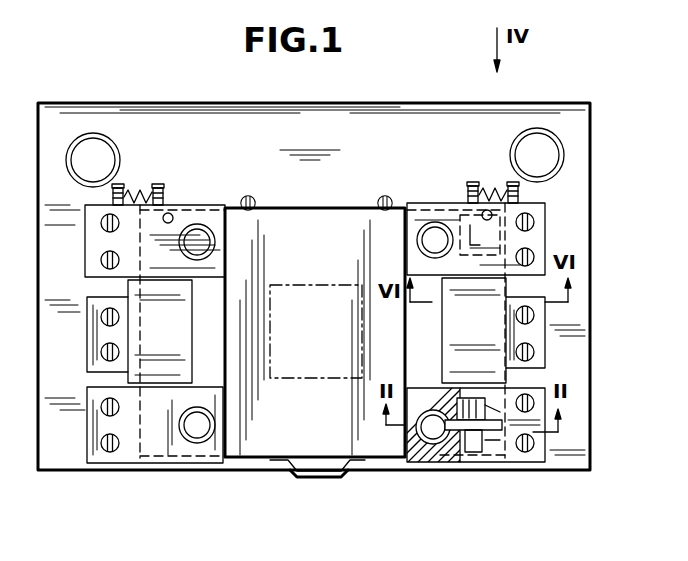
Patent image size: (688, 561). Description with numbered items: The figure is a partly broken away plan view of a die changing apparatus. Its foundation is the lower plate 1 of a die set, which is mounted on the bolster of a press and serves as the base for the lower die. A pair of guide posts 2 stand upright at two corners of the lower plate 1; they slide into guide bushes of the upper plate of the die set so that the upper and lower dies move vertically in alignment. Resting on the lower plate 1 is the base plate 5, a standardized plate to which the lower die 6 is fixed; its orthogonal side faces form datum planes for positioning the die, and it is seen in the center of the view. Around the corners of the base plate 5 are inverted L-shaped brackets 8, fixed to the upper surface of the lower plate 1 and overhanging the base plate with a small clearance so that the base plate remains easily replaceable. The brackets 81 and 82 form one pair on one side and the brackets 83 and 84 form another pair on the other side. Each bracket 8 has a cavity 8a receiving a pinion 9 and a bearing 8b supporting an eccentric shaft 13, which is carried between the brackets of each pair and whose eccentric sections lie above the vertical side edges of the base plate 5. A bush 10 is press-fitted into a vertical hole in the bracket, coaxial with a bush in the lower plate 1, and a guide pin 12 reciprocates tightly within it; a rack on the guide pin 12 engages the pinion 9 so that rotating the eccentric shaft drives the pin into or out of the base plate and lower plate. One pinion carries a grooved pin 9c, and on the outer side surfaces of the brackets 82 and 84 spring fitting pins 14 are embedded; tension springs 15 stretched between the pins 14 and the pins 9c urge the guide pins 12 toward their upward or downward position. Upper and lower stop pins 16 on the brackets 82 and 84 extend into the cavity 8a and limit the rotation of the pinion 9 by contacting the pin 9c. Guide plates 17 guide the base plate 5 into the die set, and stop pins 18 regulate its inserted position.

The lower plate 1 is at (52, 430).
The guide posts 2 is at (82, 160).
The base plate 5 is at (258, 450).
The lower die 6 is at (306, 285).
The brackets 8 is at (178, 497).
The cavity 8a is at (498, 452).
The bearing 8b is at (483, 410).
The pinion 9 is at (462, 452).
The pin 9c is at (164, 192).
The bush 10 is at (425, 395).
The guide pin 12 is at (428, 452).
The eccentric shaft 13 is at (452, 326).
The spring fitting pins 14 is at (124, 186).
The tension springs 15 is at (150, 193).
The stop pins 16 is at (546, 216).
The guide plates 17 is at (98, 344).
The stop pins 18 is at (250, 196).
The bracket 81 is at (540, 448).
The bracket 82 is at (545, 237).
The bracket 83 is at (122, 453).
The bracket 84 is at (93, 246).